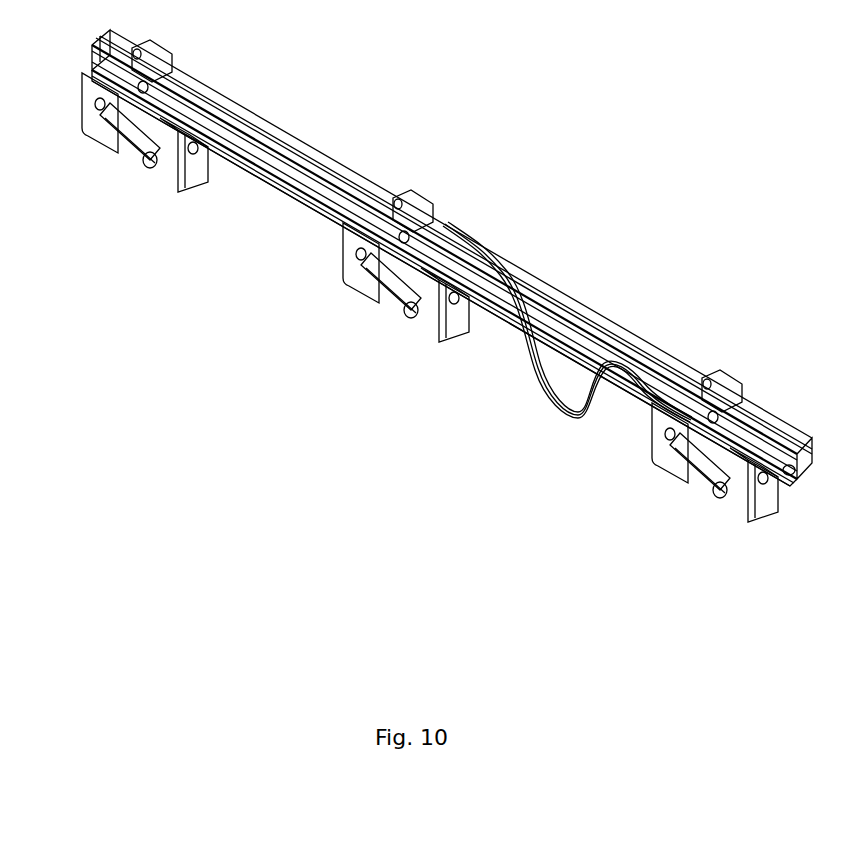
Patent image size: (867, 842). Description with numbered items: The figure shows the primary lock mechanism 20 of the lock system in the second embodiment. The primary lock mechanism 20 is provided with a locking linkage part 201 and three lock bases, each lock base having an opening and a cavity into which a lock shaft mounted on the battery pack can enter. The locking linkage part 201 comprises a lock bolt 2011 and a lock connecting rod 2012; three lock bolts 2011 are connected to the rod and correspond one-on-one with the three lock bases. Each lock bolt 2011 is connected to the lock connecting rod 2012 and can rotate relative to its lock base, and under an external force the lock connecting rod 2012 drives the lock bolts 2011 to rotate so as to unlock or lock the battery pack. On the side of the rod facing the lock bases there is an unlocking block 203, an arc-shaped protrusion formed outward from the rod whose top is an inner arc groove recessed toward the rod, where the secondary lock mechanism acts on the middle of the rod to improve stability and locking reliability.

The primary lock mechanism 20 is at (819, 607).
The locking linkage part 201 is at (562, 144).
The lock bolt 2011 is at (420, 213).
The lock connecting rod 2012 is at (487, 247).
The unlocking block 203 is at (562, 413).